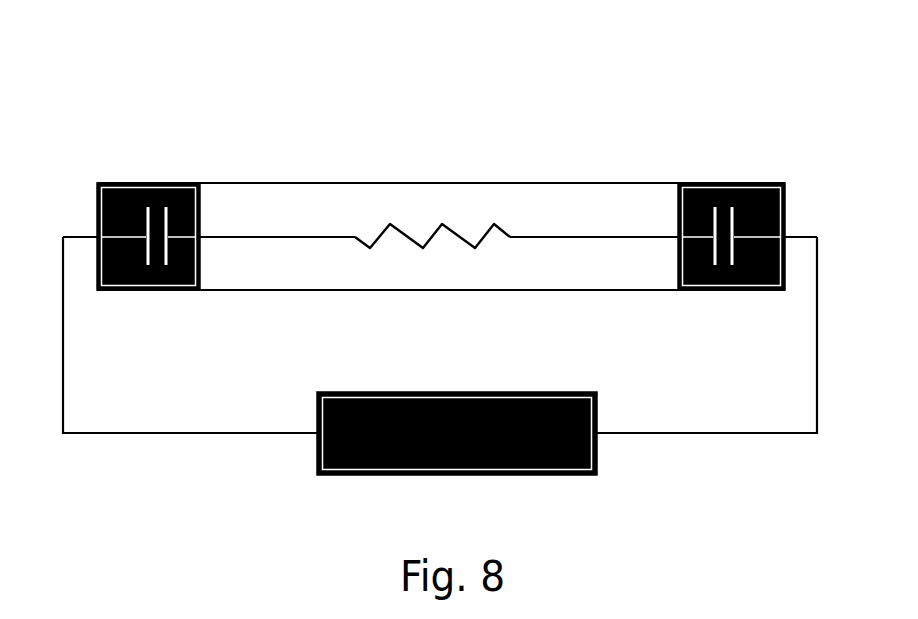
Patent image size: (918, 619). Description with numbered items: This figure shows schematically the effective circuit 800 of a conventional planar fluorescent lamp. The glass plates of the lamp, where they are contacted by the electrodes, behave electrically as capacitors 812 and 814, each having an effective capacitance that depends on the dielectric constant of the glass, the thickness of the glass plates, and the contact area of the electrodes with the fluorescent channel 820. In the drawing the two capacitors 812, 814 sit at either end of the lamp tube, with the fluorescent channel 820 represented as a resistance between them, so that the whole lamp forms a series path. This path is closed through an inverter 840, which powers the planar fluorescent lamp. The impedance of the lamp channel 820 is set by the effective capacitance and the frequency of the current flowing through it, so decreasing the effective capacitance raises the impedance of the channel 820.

The effective circuit 800 is at (590, 52).
The capacitor 812 is at (157, 191).
The capacitor 814 is at (731, 191).
The fluorescent channel 820 is at (410, 228).
The inverter 840 is at (350, 422).